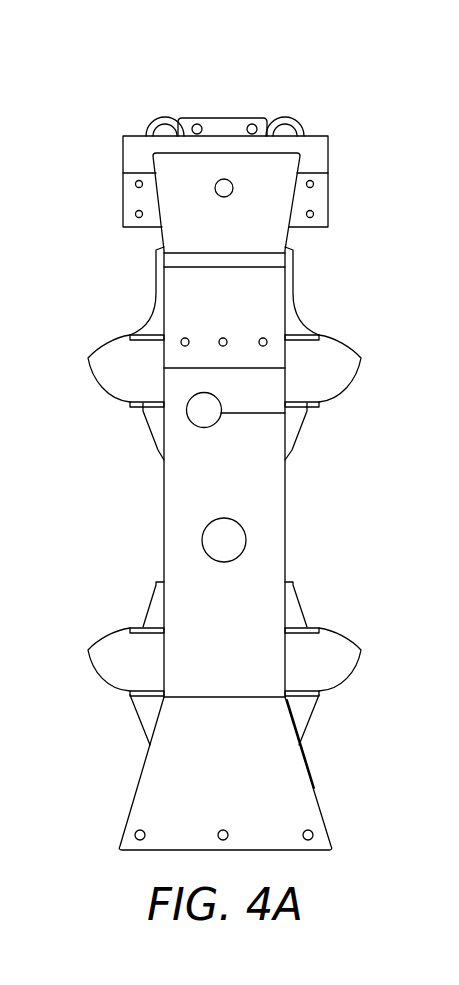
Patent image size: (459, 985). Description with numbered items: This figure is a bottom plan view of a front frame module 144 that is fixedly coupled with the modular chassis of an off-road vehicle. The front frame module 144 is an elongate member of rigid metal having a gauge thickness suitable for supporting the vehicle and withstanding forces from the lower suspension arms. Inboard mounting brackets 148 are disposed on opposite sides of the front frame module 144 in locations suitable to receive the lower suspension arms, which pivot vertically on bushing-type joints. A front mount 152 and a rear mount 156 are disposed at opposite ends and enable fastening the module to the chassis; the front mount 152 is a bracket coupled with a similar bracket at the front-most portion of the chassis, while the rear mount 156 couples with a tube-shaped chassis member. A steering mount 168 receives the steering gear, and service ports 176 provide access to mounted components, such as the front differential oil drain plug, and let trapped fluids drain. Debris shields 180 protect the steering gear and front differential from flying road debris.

The front frame module 144 is at (150, 63).
The inboard mounting brackets 148 is at (88, 358).
The front mount 152 is at (242, 118).
The rear mount 156 is at (298, 792).
The steering mount 168 is at (328, 185).
The service ports 176 is at (213, 427).
The debris shields 180 is at (185, 218).